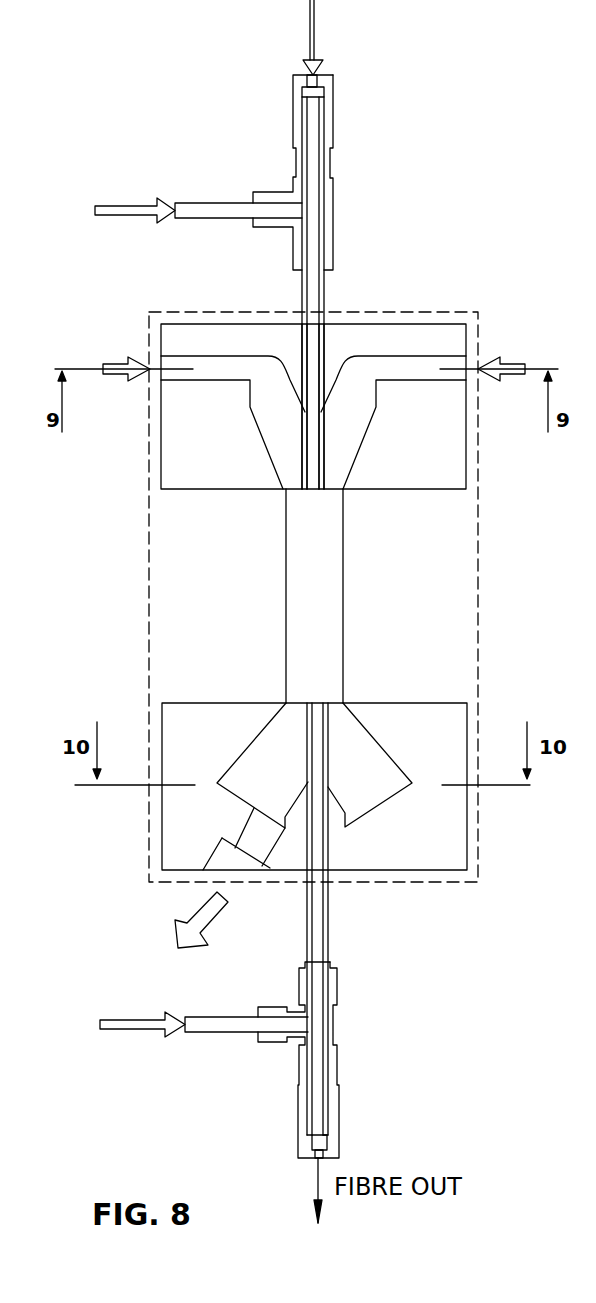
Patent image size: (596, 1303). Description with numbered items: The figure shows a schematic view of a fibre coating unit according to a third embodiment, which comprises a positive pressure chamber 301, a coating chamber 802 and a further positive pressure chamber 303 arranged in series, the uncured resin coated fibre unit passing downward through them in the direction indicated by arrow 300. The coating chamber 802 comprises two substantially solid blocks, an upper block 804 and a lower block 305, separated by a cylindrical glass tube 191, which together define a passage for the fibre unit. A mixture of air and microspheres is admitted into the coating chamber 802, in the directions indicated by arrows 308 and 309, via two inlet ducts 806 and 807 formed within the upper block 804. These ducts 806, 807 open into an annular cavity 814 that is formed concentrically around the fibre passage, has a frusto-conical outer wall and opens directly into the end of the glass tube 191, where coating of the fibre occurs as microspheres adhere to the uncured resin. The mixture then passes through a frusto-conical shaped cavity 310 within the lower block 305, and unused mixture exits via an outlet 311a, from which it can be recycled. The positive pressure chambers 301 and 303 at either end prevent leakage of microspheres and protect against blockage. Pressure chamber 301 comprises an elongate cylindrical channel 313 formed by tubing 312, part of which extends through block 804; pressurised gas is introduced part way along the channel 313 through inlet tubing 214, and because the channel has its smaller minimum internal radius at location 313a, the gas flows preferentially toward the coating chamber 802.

The arrow 300 is at (308, 44).
The location of smaller minimum internal radius 313a is at (307, 80).
The positive pressure chamber 301 is at (258, 277).
The tubing 312 is at (320, 160).
The tubing 214 is at (245, 218).
The coating chamber 802 is at (150, 318).
The upper block 804 is at (295, 397).
The elongate cylindrical channel 313 is at (313, 347).
The air inlet (left) 308 is at (140, 357).
The arrow 309 is at (482, 352).
The inlet duct 806 is at (217, 372).
The annular cavity 814 is at (273, 435).
The inlet duct 807 is at (400, 375).
The cylindrical glass tube 191 is at (286, 598).
The lower block 305 is at (269, 890).
The frusto-conical shaped cavity 310 is at (257, 770).
The outlet 311a is at (238, 862).
The positive pressure chamber 303 is at (253, 1085).